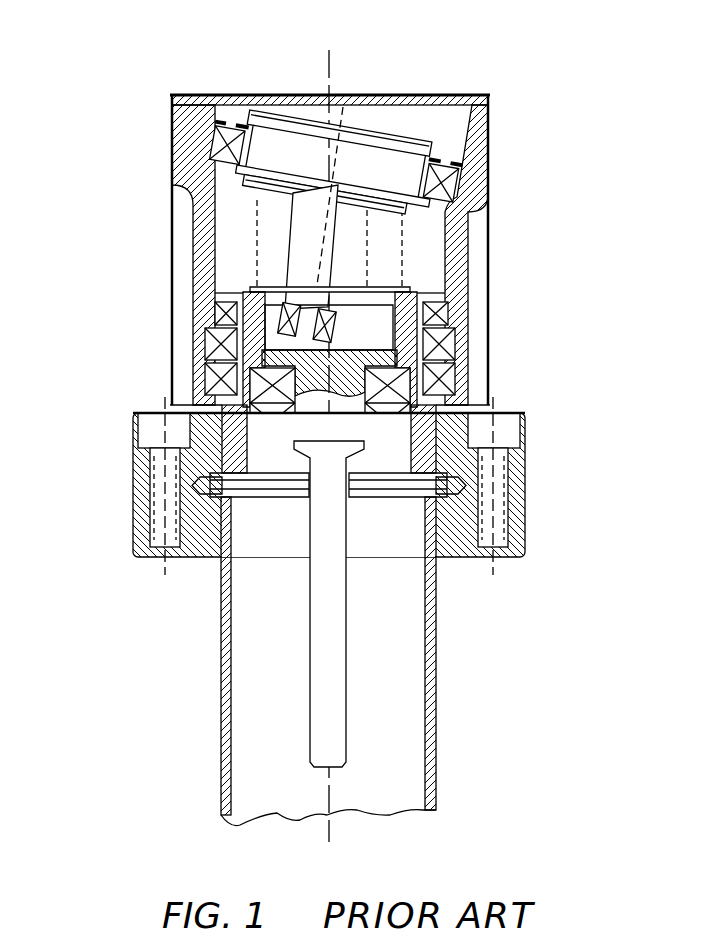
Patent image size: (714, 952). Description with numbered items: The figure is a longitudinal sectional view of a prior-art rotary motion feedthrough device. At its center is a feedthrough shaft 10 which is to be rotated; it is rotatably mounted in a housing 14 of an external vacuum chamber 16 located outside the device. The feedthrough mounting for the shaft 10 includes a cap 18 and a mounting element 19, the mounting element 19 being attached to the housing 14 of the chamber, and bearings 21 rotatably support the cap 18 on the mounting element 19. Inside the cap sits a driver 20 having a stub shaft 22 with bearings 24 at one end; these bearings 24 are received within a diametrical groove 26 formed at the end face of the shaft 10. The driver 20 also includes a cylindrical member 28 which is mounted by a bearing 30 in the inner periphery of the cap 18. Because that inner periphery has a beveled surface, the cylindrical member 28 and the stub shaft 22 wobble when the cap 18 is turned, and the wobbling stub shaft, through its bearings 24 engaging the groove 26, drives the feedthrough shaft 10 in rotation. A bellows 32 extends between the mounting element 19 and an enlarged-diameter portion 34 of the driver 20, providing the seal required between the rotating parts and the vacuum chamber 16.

The feedthrough shaft 10 is at (334, 716).
The housing 14 is at (436, 622).
The external vacuum chamber 16 is at (467, 659).
The cap 18 is at (172, 152).
The mounting element 19 is at (138, 455).
The driver 20 is at (337, 226).
The bearings 21 is at (400, 424).
The stub shaft 22 is at (330, 318).
The bearings 24 is at (413, 315).
The diametrical groove 26 is at (275, 340).
The cylindrical member 28 is at (275, 145).
The bearing 30 is at (212, 124).
The bellows 32 is at (257, 212).
The enlarged-diameter portion 34 is at (450, 212).